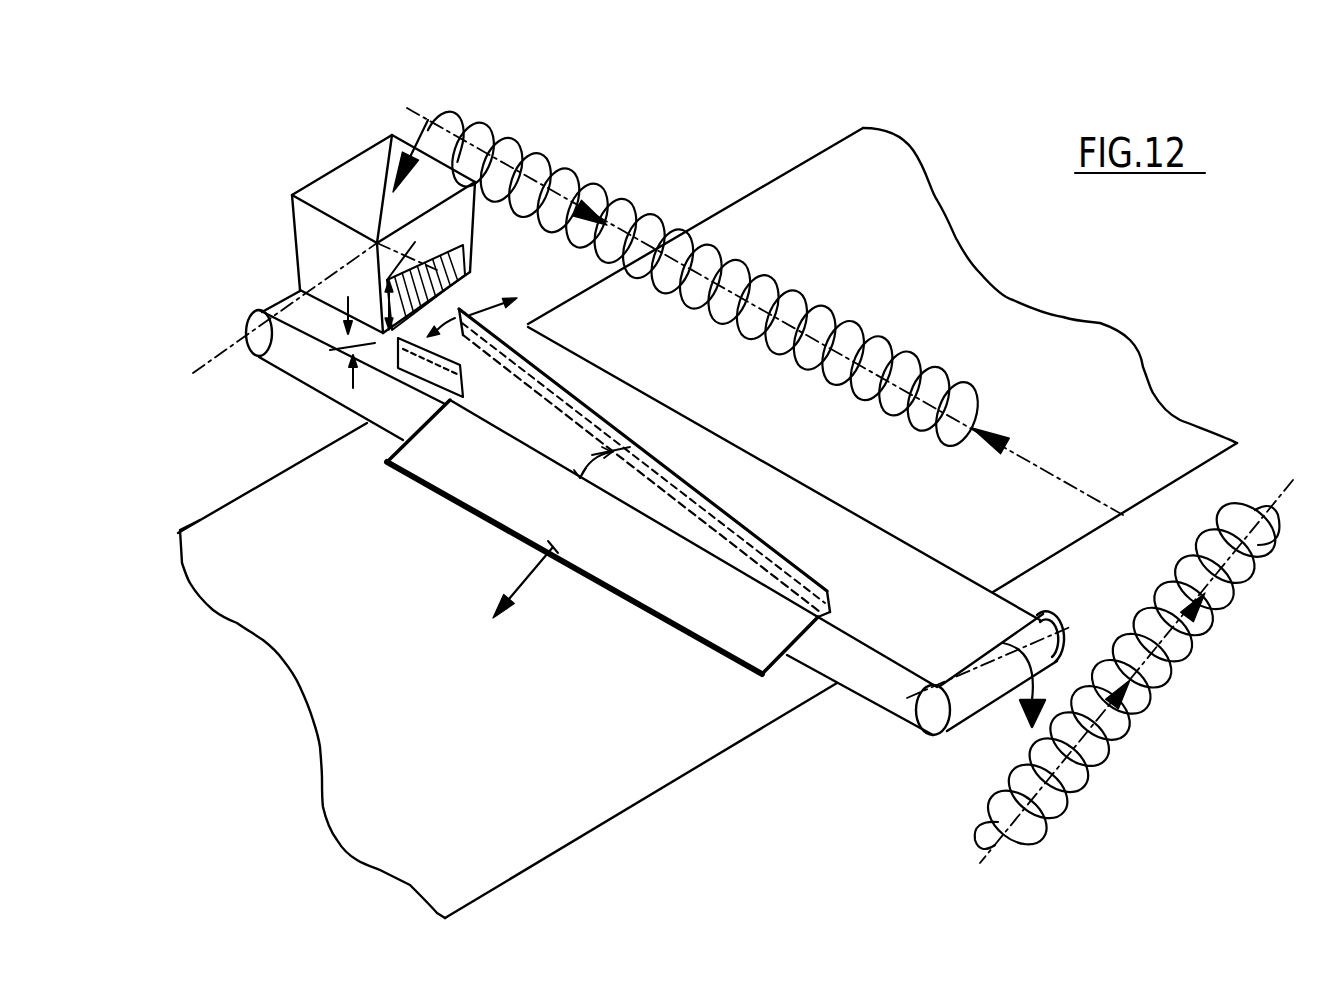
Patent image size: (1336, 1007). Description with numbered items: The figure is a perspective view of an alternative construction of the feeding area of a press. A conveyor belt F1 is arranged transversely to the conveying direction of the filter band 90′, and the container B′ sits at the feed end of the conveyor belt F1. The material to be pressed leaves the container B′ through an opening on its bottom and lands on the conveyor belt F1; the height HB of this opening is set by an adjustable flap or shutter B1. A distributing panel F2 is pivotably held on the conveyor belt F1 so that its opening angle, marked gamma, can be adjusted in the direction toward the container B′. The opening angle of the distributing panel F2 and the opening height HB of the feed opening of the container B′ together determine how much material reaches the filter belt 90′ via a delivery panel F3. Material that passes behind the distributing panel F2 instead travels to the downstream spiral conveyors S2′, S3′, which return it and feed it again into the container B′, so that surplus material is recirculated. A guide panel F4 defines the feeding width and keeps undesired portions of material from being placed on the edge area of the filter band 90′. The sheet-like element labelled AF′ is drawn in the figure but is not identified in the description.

The web sheet AF′ is at (763, 153).
The filter band 90′ is at (476, 715).
The container B′ is at (383, 226).
The adjustable flap or shutter B1 is at (458, 263).
The height of the opening HB is at (337, 342).
The guide panel F4 is at (430, 370).
The delivery panel F3 is at (660, 584).
The distributing panel F2 is at (628, 447).
The conveyor belt F1 is at (733, 470).
The spiral conveyor S3′ is at (637, 200).
The spiral conveyor S2′ is at (1193, 662).